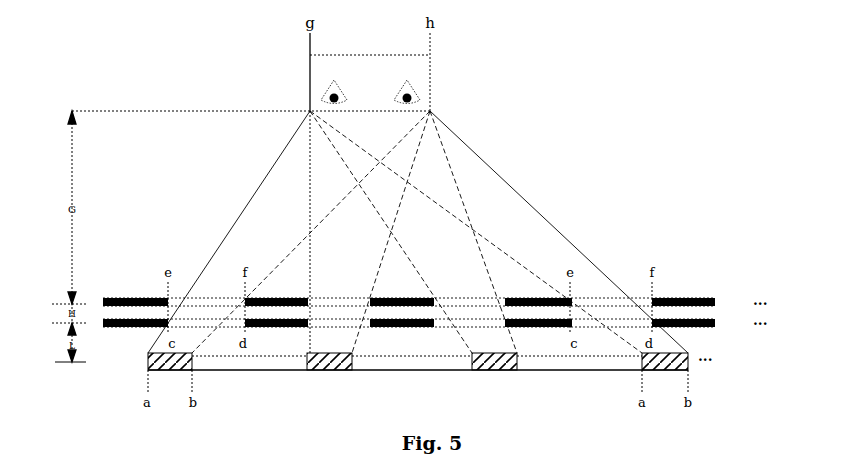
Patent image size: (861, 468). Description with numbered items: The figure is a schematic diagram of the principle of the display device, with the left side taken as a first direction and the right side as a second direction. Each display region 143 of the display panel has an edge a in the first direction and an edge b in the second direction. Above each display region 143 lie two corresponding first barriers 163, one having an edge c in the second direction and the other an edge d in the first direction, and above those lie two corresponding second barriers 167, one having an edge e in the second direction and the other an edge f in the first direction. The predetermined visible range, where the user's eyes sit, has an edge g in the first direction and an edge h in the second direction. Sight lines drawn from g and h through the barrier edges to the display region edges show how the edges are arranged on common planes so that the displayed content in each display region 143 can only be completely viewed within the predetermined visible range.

The display region 143 is at (688, 354).
The first barrier 163 is at (709, 322).
The second barrier 167 is at (694, 298).